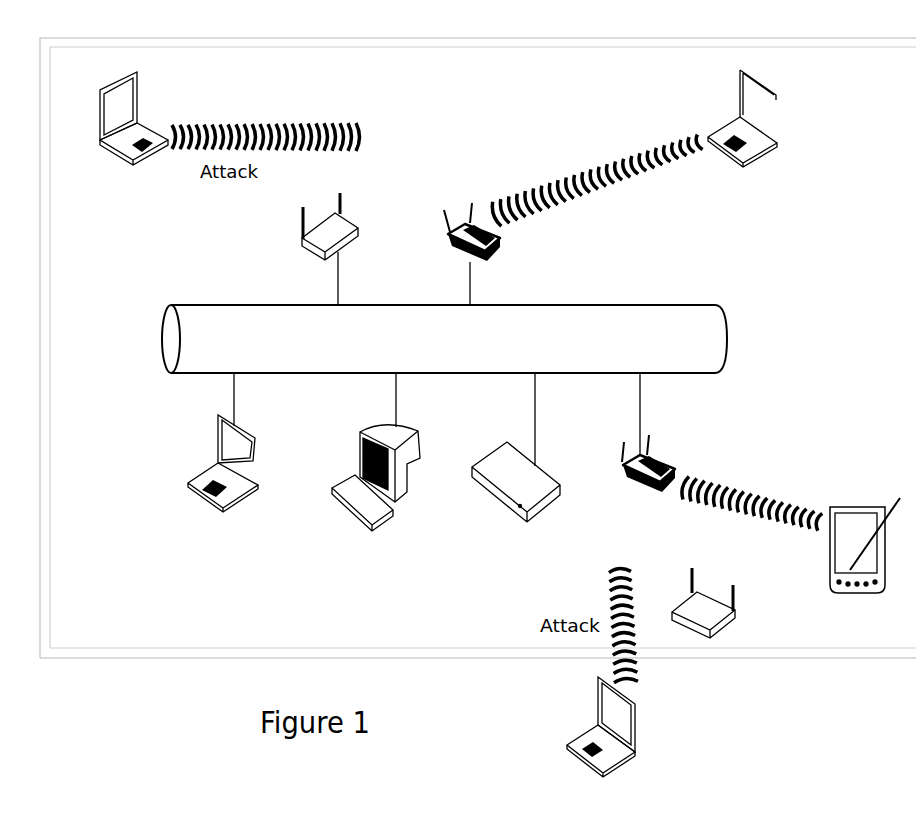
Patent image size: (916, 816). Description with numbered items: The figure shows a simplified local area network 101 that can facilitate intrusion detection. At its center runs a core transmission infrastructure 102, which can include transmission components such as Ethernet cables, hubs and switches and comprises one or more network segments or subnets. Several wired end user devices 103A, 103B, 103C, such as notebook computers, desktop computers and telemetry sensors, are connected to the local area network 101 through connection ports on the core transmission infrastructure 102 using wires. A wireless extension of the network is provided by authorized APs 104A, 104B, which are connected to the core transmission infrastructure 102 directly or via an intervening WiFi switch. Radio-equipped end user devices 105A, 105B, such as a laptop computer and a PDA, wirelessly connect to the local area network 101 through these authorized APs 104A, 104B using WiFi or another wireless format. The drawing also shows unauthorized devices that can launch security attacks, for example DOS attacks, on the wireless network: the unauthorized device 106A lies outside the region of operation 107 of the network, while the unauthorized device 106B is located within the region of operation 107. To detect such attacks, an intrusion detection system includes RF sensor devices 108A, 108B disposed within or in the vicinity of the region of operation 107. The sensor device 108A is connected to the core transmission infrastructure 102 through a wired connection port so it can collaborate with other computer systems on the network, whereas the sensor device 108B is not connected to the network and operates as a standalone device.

The local area network 101 is at (150, 585).
The core transmission infrastructure 102 is at (162, 332).
The end user device 103A is at (226, 507).
The end user device 103B is at (370, 512).
The end user device 103C is at (515, 511).
The authorized AP 104A is at (447, 229).
The authorized AP 104B is at (665, 461).
The end user device 105A is at (777, 108).
The end user device 105B is at (855, 505).
The unauthorized device 106A is at (640, 725).
The unauthorized device 106B is at (142, 92).
The region of operation 107 is at (473, 37).
The sensor device 108A is at (300, 238).
The sensor device 108B is at (740, 620).